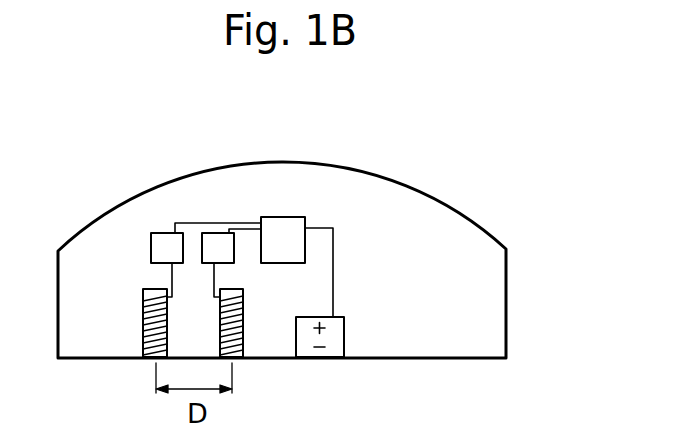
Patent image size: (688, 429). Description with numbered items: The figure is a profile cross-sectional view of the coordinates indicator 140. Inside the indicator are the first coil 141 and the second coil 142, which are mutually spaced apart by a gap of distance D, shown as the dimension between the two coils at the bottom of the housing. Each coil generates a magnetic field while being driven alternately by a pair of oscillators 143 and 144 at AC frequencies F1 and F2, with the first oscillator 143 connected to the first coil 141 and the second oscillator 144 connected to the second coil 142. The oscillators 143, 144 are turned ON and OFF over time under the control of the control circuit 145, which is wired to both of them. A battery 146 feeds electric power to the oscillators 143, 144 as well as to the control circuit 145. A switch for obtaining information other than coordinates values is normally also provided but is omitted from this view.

The coordinates indicator 140 is at (506, 303).
The first coil 141 is at (143, 307).
The second coil 142 is at (243, 305).
The oscillator 143 is at (160, 233).
The oscillator 144 is at (211, 233).
The control circuit 145 is at (282, 217).
The battery 146 is at (344, 335).